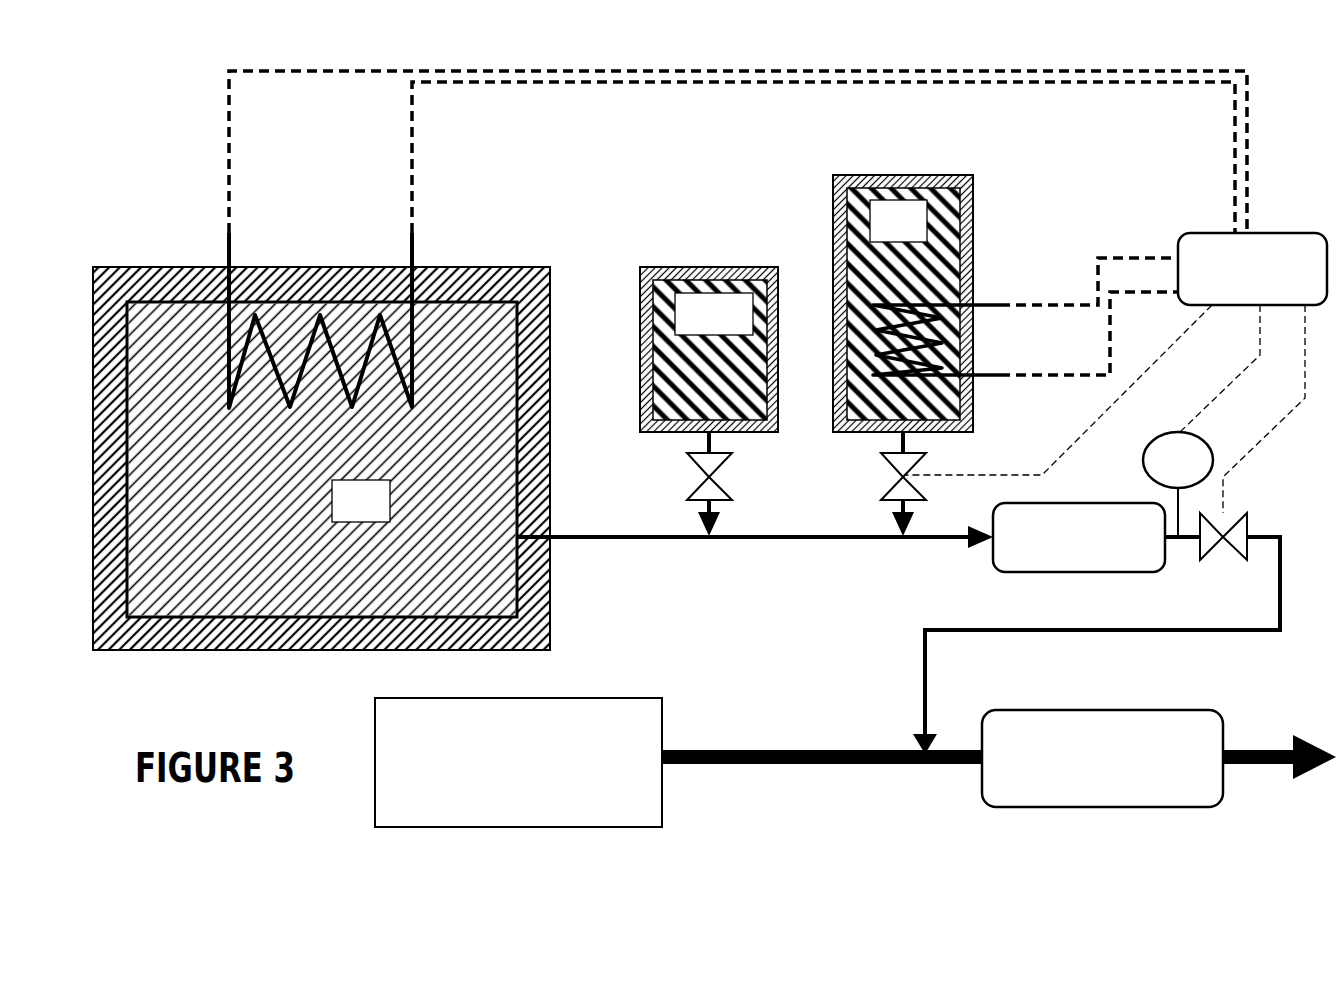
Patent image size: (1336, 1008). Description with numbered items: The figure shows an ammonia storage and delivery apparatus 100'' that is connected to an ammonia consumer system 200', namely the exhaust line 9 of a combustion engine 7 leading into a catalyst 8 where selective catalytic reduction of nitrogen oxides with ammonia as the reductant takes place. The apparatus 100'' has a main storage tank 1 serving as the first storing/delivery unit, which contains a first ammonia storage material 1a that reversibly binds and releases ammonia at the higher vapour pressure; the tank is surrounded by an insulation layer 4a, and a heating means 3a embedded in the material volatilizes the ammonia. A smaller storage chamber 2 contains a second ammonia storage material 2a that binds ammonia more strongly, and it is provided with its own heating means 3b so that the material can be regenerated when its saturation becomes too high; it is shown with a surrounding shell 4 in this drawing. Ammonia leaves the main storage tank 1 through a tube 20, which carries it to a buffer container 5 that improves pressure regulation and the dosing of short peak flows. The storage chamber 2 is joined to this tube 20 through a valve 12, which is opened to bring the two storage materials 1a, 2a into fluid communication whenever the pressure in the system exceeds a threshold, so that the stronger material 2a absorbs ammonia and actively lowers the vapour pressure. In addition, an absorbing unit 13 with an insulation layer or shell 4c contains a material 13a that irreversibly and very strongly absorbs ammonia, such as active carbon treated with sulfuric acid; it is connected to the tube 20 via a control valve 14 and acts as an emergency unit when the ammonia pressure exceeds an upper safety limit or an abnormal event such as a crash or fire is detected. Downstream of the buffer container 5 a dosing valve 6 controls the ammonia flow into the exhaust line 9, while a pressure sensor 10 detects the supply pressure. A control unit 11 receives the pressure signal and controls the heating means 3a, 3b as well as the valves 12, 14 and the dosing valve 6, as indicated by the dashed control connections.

The ammonia storage and delivery apparatus 100'' is at (94, 106).
The main storage tank 1 is at (322, 460).
The first ammonia storage material 1a is at (176, 449).
The storage chamber 2 is at (898, 221).
The second ammonia storage material 2a is at (945, 270).
The heating means 3a is at (294, 320).
The heating means 3b is at (951, 340).
The housing 4 is at (980, 204).
The insulation layer 4a is at (465, 268).
The insulation layer/shell 4c is at (660, 260).
The buffer container 5 is at (1079, 537).
The dosing valve 6 is at (1096, 633).
The combustion engine 7 is at (518, 762).
The catalyst 8 is at (1159, 758).
The exhaust line 9 is at (823, 741).
The pressure sensor 10 is at (1178, 484).
The control unit 11 is at (778, 292).
The valve 12 is at (888, 484).
The absorbing unit 13 is at (714, 314).
The ammonia storage material 13a is at (760, 407).
The control valve 14 is at (693, 484).
The tube 20 is at (790, 550).
The ammonia consumer system 200' is at (817, 813).